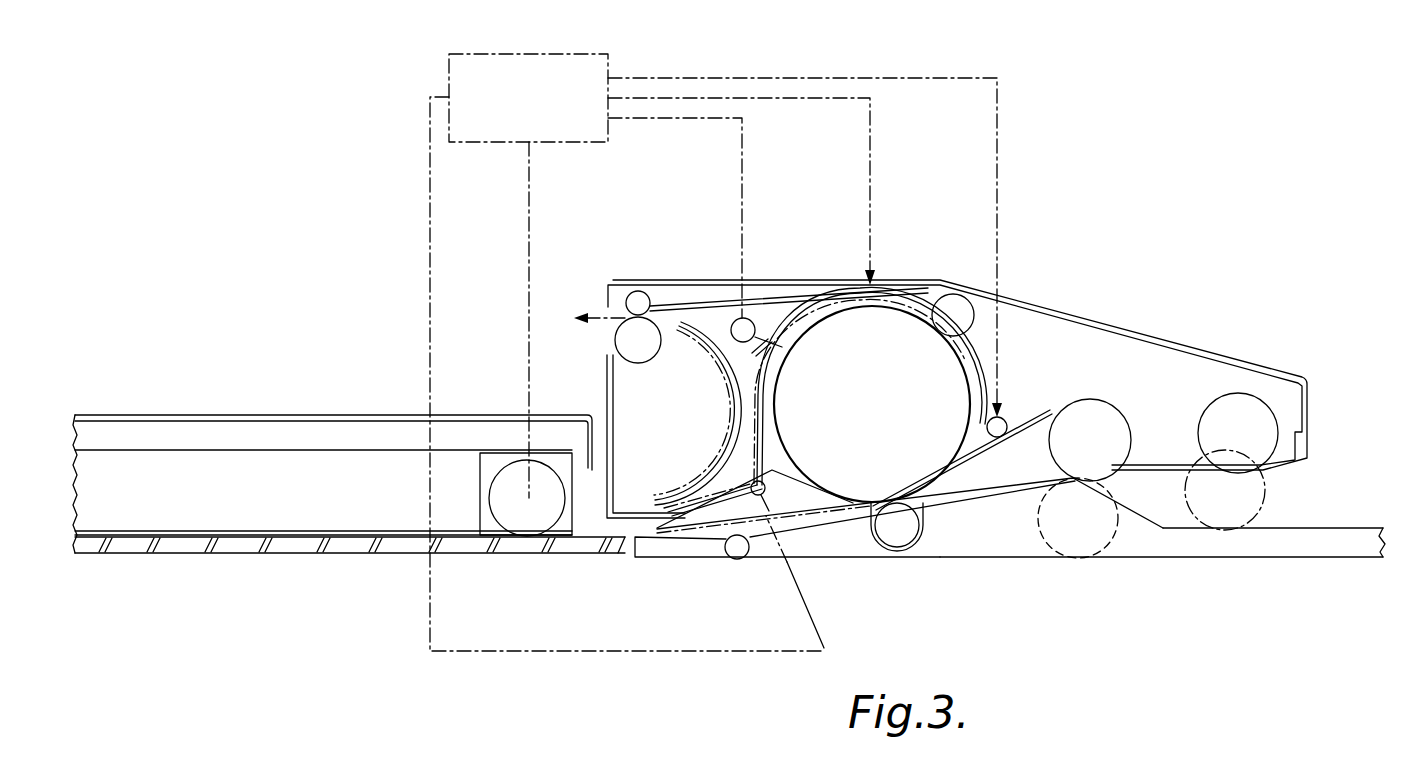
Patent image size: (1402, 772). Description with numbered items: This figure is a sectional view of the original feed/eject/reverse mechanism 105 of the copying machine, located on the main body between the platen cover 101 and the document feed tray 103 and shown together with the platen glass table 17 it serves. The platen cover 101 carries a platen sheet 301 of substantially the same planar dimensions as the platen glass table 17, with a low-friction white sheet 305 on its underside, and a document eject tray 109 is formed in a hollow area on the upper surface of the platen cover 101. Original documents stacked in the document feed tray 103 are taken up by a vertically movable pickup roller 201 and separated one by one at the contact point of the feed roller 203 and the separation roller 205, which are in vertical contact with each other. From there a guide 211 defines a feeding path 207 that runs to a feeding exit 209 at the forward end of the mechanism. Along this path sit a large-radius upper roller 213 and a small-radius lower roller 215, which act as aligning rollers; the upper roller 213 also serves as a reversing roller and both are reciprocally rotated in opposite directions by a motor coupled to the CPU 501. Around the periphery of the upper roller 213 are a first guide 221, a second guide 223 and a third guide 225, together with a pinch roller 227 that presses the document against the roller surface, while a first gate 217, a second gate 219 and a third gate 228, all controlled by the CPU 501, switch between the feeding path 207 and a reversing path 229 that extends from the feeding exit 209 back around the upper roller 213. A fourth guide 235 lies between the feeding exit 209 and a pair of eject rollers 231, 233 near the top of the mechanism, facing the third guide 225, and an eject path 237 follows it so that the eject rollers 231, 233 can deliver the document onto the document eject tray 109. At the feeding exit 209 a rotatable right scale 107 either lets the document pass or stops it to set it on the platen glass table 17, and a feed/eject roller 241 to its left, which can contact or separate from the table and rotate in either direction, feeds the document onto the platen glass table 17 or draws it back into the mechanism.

The CPU 501 is at (579, 72).
The platen cover 101 is at (207, 415).
The document eject tray 109 is at (399, 405).
The platen sheet 301 is at (347, 504).
The platen glass table 17 is at (233, 551).
The white sheet 305 is at (140, 545).
The feed/eject roller 241 is at (522, 518).
The feeding exit 209 is at (628, 525).
The right scale 107 is at (687, 548).
The feeding path 207 is at (765, 550).
The second gate 219 is at (803, 495).
The lower roller 215 is at (899, 530).
The guide 211 is at (1025, 543).
The first gate 217 is at (985, 447).
The separation roller 205 is at (1110, 543).
The document feed tray 103 is at (1250, 543).
The feed roller 203 is at (1093, 413).
The pickup roller 201 is at (1225, 408).
The original feed/eject/reverse mechanism 105 is at (1042, 299).
The upper roller 213 is at (906, 332).
The pinch roller 227 is at (964, 311).
The reversing path 229 is at (990, 362).
The first guide 221 is at (998, 415).
The third gate 228 is at (757, 318).
The second guide 223 is at (784, 353).
The third guide 225 is at (771, 398).
The eject roller 231 is at (640, 290).
The eject roller 233 is at (646, 344).
The fourth guide 235 is at (736, 412).
The eject path 237 is at (720, 456).